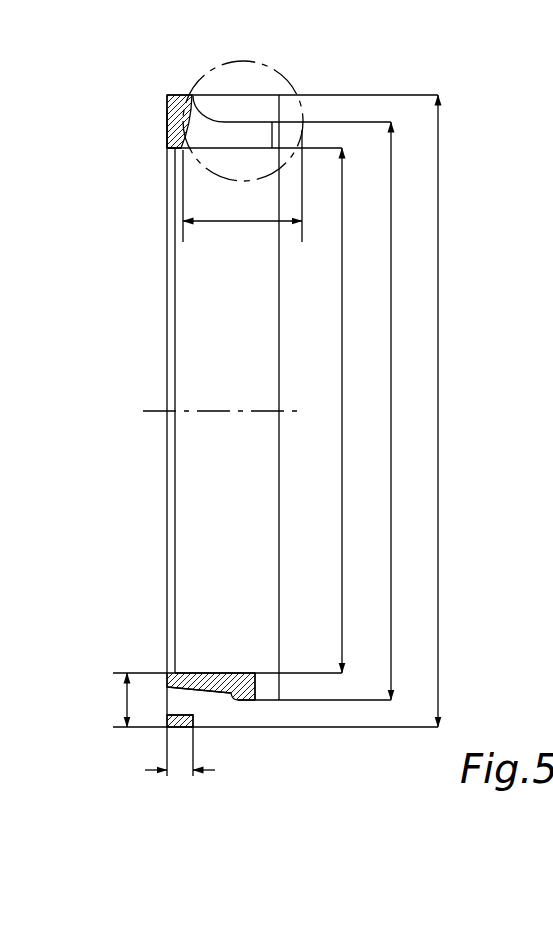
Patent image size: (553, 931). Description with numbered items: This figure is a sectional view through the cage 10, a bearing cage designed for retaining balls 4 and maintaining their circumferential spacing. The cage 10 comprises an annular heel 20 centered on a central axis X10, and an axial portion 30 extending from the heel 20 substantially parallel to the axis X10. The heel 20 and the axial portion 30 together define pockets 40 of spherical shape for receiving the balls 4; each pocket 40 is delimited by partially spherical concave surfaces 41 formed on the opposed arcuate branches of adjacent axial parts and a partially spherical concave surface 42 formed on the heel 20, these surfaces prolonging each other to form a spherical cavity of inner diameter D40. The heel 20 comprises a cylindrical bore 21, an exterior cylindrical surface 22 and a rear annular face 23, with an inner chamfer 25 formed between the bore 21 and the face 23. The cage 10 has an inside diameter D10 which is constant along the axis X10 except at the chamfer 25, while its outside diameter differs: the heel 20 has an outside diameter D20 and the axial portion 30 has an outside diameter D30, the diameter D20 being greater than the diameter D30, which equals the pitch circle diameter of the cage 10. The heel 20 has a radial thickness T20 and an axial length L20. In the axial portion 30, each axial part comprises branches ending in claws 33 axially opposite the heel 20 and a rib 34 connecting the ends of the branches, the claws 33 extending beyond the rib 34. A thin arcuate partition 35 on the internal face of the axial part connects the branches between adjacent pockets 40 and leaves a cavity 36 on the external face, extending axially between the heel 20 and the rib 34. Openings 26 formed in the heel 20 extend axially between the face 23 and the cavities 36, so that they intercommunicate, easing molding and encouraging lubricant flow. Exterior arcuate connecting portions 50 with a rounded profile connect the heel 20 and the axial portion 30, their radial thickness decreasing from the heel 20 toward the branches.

The cage 10 is at (142, 43).
The ball 4 is at (283, 108).
The exterior cylindrical surface 22 is at (177, 93).
The exterior arcuate connecting portion 50 is at (167, 113).
The rear annular face 23 is at (167, 128).
The inner chamfer 25 is at (167, 151).
The cylindrical bore 21 is at (177, 152).
The partially spherical concave surface 42 is at (194, 128).
The partially spherical concave surface 41 is at (236, 126).
The pocket 40 is at (261, 121).
The arcuate partition 35 is at (200, 682).
The rib 34 is at (248, 682).
The claw 33 is at (267, 688).
The opening 26 is at (166, 697).
The cavity 36 is at (204, 696).
The annular heel 20 is at (155, 738).
The axial portion 30 is at (303, 745).
The central axis X10 is at (201, 413).
The inside diameter D10 is at (362, 410).
The outside diameter of heel D20 is at (459, 411).
The outside diameter of axial portion D30 is at (410, 411).
The inner diameter of pocket D40 is at (242, 191).
The radial thickness of heel T20 is at (111, 700).
The axial length of heel L20 is at (180, 763).